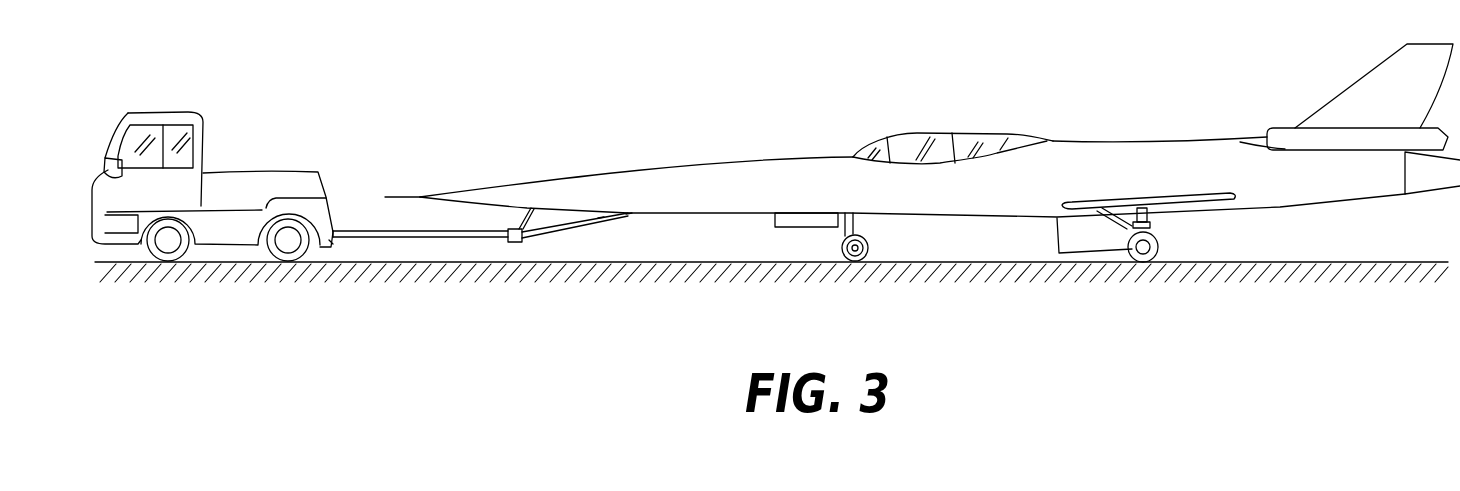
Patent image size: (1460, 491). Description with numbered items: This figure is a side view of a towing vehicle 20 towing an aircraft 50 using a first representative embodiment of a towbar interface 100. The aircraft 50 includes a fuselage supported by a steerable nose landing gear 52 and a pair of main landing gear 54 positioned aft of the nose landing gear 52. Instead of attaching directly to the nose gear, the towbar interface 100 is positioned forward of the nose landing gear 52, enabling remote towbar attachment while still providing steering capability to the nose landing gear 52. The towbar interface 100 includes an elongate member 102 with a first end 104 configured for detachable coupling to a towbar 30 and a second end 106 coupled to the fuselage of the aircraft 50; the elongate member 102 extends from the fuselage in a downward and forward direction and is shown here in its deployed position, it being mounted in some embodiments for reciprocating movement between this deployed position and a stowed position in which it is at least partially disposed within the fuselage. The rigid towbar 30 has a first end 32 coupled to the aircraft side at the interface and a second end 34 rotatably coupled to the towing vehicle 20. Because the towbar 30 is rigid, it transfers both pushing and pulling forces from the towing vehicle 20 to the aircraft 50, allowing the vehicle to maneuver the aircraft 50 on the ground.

The towing vehicle 20 is at (248, 172).
The towbar 30 is at (403, 240).
The first end of the towbar 32 is at (506, 244).
The second end of the towbar 34 is at (341, 243).
The aircraft 50 is at (1112, 133).
The nose landing gear 52 is at (867, 250).
The main landing gear 54 is at (1157, 253).
The towbar interface 100 is at (573, 233).
The elongate member 102 is at (600, 218).
The first end of the elongate member 104 is at (523, 243).
The second end of the elongate member 106 is at (628, 216).